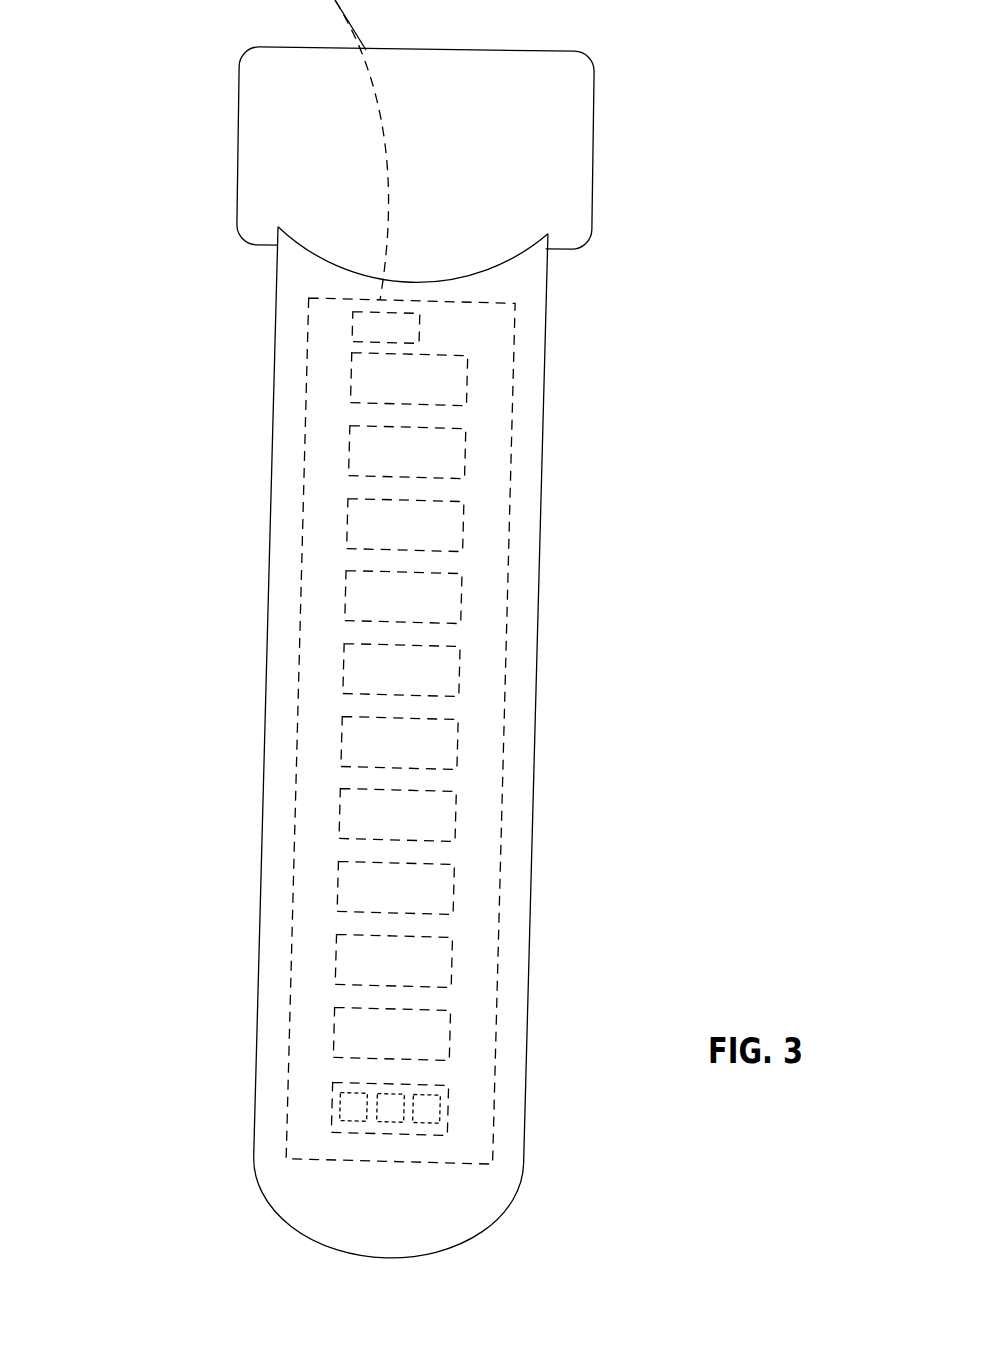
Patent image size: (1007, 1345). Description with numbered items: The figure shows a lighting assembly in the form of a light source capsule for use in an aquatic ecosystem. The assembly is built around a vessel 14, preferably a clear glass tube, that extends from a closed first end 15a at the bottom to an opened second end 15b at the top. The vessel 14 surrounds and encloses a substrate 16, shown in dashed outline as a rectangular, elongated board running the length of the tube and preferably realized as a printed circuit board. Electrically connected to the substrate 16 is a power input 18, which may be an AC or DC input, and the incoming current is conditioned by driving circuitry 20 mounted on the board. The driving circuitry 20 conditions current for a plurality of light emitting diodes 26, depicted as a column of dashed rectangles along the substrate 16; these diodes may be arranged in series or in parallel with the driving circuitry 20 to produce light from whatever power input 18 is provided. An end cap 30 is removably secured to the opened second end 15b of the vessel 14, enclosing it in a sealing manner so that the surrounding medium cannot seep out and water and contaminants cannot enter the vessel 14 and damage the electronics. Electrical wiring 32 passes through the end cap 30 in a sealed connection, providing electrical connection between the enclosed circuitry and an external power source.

The vessel 14 is at (173, 290).
The closed first end 15a is at (173, 1145).
The opened second end 15b is at (154, 124).
The substrate 16 is at (485, 605).
The power input 18 is at (492, 314).
The driving circuitry 20 is at (492, 368).
The light emitting diodes 26 is at (423, 610).
The end cap 30 is at (605, 126).
The electrical wiring 32 is at (358, 32).